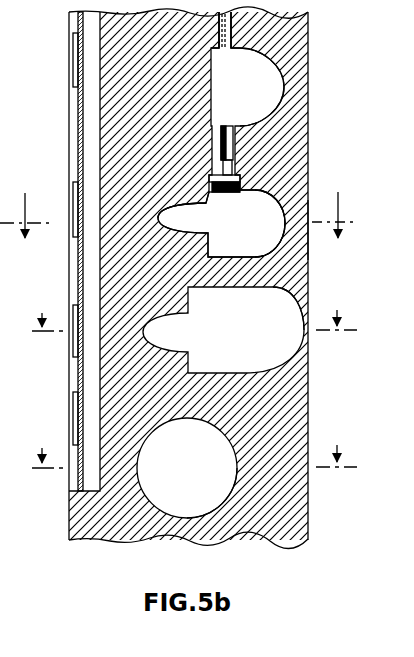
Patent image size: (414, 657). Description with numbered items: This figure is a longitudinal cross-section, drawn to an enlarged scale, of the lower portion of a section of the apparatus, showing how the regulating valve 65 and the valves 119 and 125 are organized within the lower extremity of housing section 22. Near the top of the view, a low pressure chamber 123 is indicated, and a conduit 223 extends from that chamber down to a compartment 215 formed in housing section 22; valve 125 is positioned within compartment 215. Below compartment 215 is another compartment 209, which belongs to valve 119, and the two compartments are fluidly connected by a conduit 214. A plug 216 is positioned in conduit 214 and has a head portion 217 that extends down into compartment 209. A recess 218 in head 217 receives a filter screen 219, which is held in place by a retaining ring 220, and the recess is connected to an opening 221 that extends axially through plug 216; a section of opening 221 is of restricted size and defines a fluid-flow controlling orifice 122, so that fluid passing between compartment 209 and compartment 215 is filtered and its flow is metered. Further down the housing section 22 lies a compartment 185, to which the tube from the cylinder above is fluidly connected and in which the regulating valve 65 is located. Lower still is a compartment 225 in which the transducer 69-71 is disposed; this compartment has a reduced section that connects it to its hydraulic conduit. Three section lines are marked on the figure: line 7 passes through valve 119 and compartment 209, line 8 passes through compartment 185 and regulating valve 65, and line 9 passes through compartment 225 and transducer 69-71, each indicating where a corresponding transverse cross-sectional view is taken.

The low pressure chamber 123 is at (222, 3).
The valve 125 is at (221, 134).
The conduit 223 is at (227, 50).
The compartment 215 is at (280, 99).
The conduit 214 is at (220, 133).
The plug 216 is at (222, 148).
The opening 221 is at (223, 163).
The fluid-flow controlling orifice 122 is at (222, 175).
The head portion 217 is at (213, 187).
The recess 218 is at (213, 199).
The filter screen 219 is at (222, 194).
The retaining ring 220 is at (239, 194).
The valve 119 is at (221, 223).
The compartment 209 is at (282, 225).
The compartment 185 is at (278, 301).
The regulating valve 65 is at (223, 330).
The transducer 69-71 is at (187, 468).
The compartment 225 is at (233, 489).
The housing section 22 is at (314, 228).
The section line 7- 7 is at (178, 215).
The section line 8- 8 is at (194, 313).
The section line 9- 9 is at (194, 449).